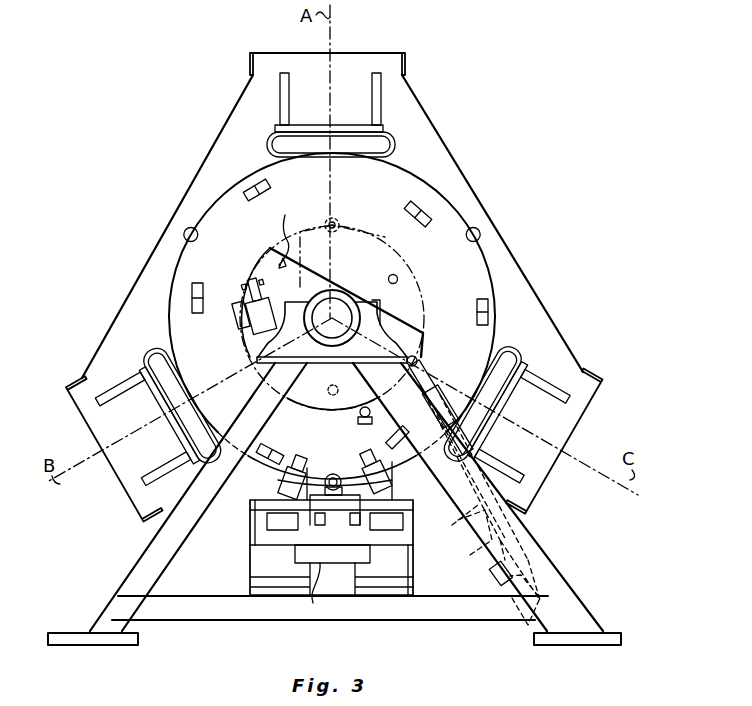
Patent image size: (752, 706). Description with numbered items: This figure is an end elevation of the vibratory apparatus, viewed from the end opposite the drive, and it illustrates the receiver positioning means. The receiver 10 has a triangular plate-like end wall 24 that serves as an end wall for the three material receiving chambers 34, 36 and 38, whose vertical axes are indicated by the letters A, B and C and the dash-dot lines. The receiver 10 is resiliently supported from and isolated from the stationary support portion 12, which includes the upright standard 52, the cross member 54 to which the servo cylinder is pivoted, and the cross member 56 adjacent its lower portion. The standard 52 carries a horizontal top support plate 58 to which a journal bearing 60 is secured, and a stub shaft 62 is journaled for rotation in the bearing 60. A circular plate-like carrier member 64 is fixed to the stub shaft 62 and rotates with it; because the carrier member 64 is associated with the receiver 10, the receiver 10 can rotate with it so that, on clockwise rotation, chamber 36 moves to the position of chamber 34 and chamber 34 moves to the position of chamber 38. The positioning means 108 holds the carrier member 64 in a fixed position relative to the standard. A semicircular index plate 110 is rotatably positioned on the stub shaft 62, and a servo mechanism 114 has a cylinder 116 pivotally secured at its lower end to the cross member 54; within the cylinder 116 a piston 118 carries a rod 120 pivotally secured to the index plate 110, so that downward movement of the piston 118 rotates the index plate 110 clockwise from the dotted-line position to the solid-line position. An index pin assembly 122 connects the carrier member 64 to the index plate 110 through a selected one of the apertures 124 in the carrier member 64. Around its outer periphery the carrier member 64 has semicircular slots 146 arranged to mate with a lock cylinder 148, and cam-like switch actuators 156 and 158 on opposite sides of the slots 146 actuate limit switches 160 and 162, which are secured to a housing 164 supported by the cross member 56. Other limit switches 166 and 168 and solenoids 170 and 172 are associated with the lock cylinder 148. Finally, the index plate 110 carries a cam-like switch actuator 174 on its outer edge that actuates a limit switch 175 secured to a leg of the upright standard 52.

The receiver 10 is at (479, 186).
The stationary support portion 12 is at (82, 612).
The end wall 24 is at (537, 298).
The material receiving chamber 34 is at (352, 50).
The material receiving chamber 36 is at (80, 418).
The material receiving chamber 38 is at (580, 424).
The upright standard 52 is at (108, 585).
The cross member 54 is at (576, 590).
The cross member 56 is at (260, 624).
The top support plate 58 is at (340, 363).
The journal bearing 60 is at (352, 300).
The stub shaft 62 is at (337, 300).
The carrier member 64 is at (165, 262).
The positioning means 108 is at (252, 290).
The index plate 110 is at (268, 252).
The servo mechanism 114 is at (570, 530).
The cylinder 116 is at (540, 545).
The piston 118 is at (457, 527).
The rod 120 is at (428, 382).
The index pin assembly 122 is at (290, 217).
The aperture 124 is at (397, 278).
The semicircular slot 146 is at (183, 230).
The lock cylinder 148 is at (352, 546).
The switch actuator 156 is at (270, 187).
The switch actuator 158 is at (416, 206).
The limit switch 160 is at (282, 485).
The limit switch 162 is at (388, 480).
The housing 164 is at (252, 542).
The limit switch 166 is at (267, 522).
The limit switch 168 is at (403, 522).
The solenoid 170 is at (334, 590).
The solenoid 172 is at (365, 552).
The switch actuator 174 is at (236, 315).
The limit switch 175 is at (360, 434).